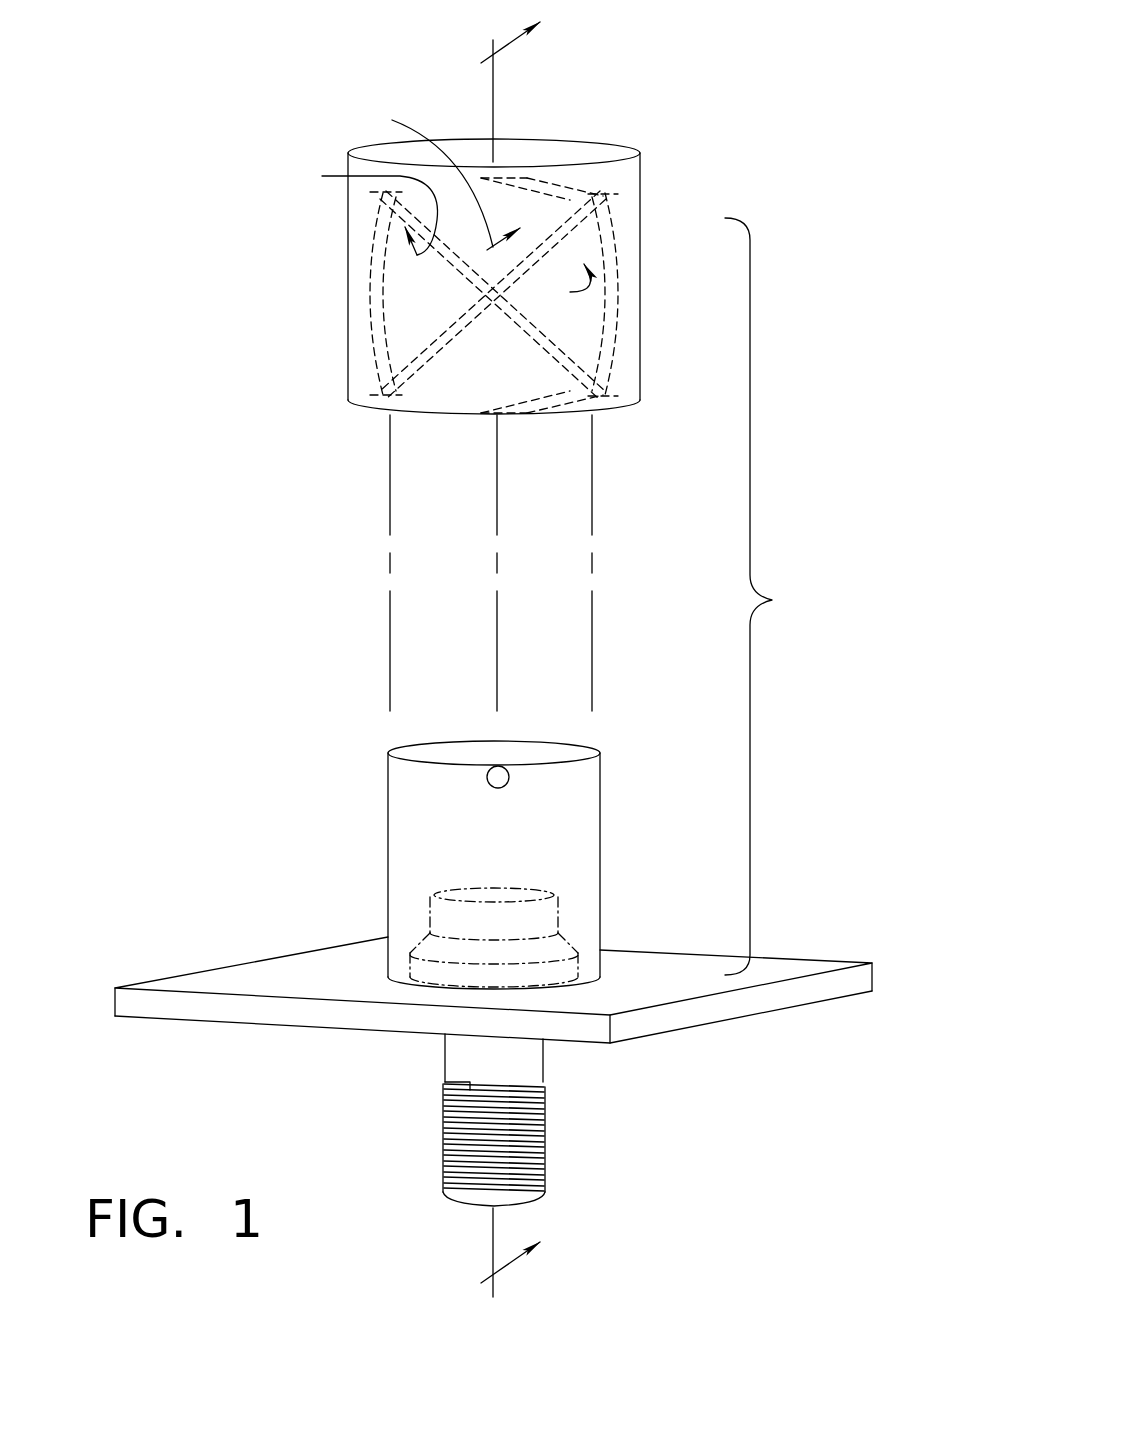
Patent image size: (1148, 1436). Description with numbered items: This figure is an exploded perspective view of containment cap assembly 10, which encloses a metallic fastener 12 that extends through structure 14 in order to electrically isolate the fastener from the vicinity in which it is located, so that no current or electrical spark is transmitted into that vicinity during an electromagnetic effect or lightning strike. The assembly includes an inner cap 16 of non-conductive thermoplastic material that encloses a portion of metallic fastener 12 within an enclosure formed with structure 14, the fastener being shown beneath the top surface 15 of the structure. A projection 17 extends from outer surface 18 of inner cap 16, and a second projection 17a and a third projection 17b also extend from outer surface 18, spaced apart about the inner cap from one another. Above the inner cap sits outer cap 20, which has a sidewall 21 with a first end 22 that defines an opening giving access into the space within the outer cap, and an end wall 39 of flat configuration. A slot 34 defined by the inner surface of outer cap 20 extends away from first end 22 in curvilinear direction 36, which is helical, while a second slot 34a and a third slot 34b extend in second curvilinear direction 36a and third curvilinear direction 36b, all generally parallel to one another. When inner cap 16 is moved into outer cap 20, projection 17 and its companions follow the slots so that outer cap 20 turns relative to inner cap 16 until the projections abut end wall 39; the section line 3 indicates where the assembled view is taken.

The section line 3- 3 is at (529, 650).
The containment cap assembly 10 is at (772, 600).
The metallic fastener 12 is at (447, 1200).
The structure 14 is at (778, 965).
The top surface of base plate 15 is at (245, 985).
The inner cap 16 is at (407, 920).
The projection 17 is at (388, 748).
The second projection 17a is at (498, 766).
The third projection 17b is at (594, 748).
The outer surface 18 is at (587, 950).
The outer cap 20 is at (423, 392).
The sidewall 21 is at (622, 196).
The first end 22 is at (577, 418).
The slot 34 is at (377, 330).
The second slot 34a is at (610, 333).
The third slot 34b is at (505, 345).
The curvilinear direction 36 is at (437, 180).
The second curvilinear direction 36a is at (554, 286).
The third curvilinear direction 36b is at (351, 205).
The end wall 39 is at (607, 150).